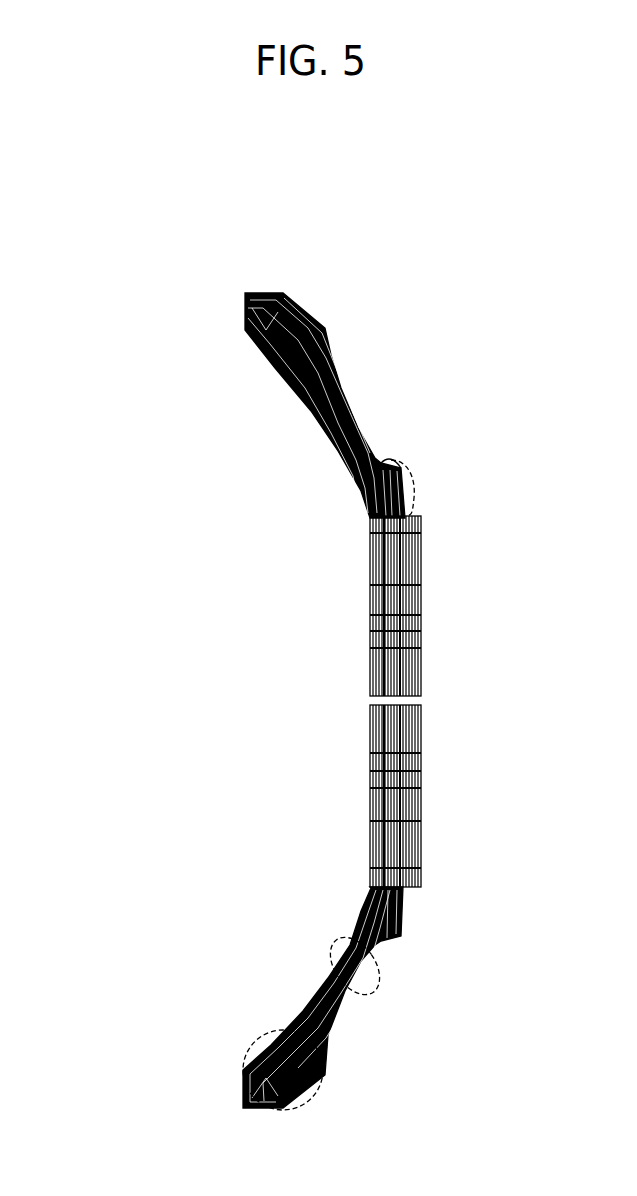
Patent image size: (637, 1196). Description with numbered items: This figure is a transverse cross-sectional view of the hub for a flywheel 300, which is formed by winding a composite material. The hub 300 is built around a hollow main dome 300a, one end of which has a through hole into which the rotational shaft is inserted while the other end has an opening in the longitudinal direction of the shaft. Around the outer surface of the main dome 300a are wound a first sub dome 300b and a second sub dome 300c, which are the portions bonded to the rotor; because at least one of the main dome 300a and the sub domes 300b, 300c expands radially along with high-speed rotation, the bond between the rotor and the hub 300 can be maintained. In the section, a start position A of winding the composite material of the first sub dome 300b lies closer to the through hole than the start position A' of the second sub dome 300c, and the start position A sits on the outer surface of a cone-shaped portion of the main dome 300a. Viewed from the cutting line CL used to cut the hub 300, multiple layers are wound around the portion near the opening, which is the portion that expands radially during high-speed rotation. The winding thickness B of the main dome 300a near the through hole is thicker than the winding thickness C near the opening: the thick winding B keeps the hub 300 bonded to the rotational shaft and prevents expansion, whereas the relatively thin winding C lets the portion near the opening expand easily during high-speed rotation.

The hub for a flywheel 300 is at (181, 479).
The main dome 300a is at (300, 290).
The first sub dome 300b is at (395, 913).
The second sub dome 300c is at (413, 590).
The start position of winding the composite material of the first sub dome A is at (409, 415).
The start position of winding the composite material around the second sub dome A' is at (429, 463).
The winding thickness of the main dome near the through hole B is at (255, 1030).
The winding thickness of the main dome near the opening C is at (332, 950).
The cutting line CL is at (375, 693).